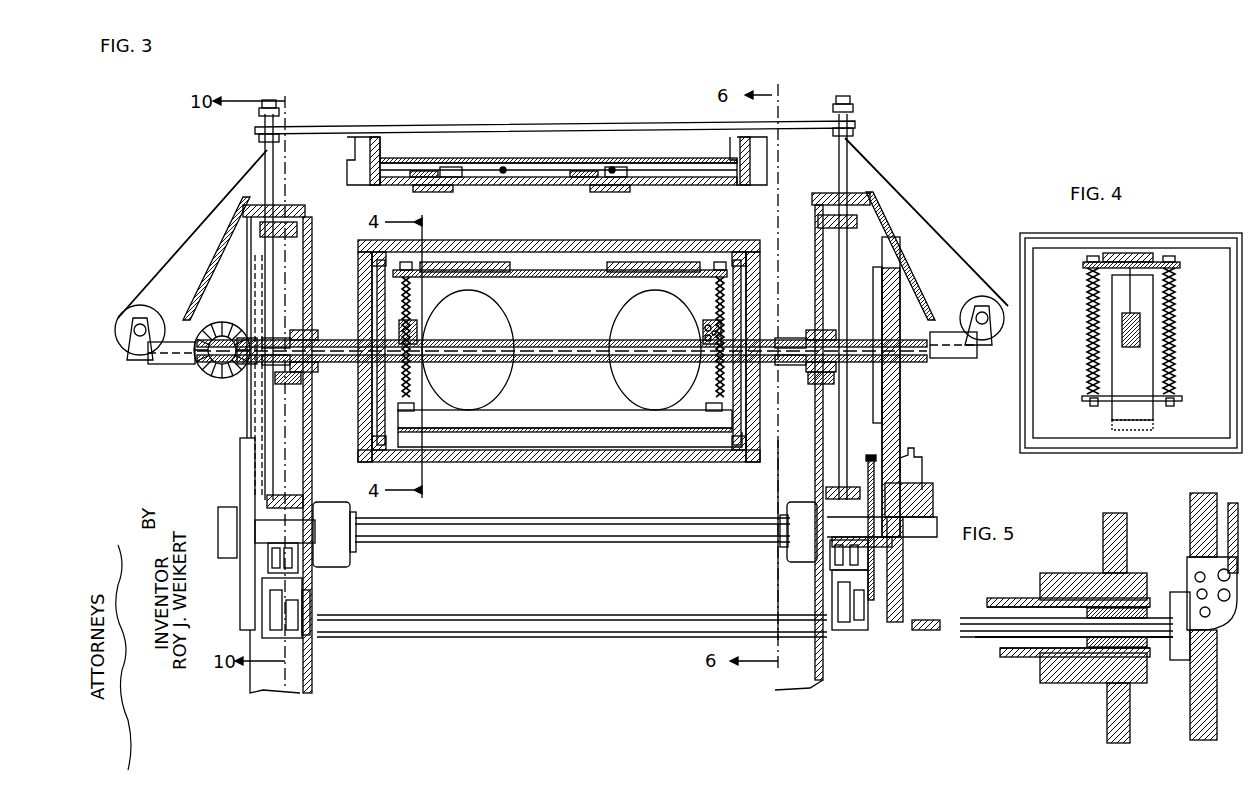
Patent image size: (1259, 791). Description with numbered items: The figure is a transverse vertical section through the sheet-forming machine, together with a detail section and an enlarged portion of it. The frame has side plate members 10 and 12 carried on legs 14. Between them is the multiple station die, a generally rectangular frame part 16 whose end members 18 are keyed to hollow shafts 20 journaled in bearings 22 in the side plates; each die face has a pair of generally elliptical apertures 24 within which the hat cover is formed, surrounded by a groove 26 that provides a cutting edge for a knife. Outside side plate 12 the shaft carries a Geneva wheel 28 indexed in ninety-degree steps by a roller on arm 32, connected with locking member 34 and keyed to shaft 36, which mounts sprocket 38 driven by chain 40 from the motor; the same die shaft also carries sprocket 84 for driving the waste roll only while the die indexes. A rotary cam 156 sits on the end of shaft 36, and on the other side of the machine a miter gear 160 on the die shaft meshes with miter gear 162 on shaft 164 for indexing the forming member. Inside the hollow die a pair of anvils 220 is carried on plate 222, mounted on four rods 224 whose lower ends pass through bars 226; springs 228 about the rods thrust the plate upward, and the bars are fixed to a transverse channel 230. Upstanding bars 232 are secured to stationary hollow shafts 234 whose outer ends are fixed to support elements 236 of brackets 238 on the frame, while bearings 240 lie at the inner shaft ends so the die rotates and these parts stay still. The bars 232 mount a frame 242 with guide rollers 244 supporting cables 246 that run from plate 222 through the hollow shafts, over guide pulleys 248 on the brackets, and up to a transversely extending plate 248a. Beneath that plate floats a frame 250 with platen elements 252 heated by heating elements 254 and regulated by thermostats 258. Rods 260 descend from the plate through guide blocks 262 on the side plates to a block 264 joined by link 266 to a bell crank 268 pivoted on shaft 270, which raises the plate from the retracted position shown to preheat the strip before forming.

In FIG. 3, the side plate member 10 is at (307, 238).
In FIG. 3, the side plate member 12 is at (800, 215).
In FIG. 3, the legs 14 is at (312, 700).
In FIG. 3, the rectangular frame part 16 is at (708, 240).
In FIG. 4, the rectangular frame part 16 is at (1037, 237).
In FIG. 3, the end members 18 is at (380, 281).
In FIG. 5, the end members 18 is at (1115, 700).
In FIG. 3, the hollow shafts 20 is at (325, 340).
In FIG. 5, the hollow shafts 20 is at (1010, 656).
In FIG. 3, the bearings 22 is at (320, 387).
In FIG. 3, the elliptical apertures 24 is at (620, 247).
In FIG. 4, the elliptical apertures 24 is at (1144, 238).
In FIG. 3, the groove 26 is at (392, 245).
In FIG. 3, the Geneva wheel 28 is at (901, 370).
In FIG. 3, the arm 32 is at (915, 468).
In FIG. 3, the locking member 34 is at (903, 562).
In FIG. 3, the shaft 36 is at (545, 533).
In FIG. 3, the sprocket 38 is at (886, 276).
In FIG. 3, the drive chain 40 is at (880, 584).
In FIG. 5, the drive chain 40 is at (1046, 607).
In FIG. 3, the sprocket 84 is at (901, 400).
In FIG. 3, the rotary cam 156 is at (245, 580).
In FIG. 3, the miter gear 160 is at (230, 375).
In FIG. 3, the miter gear 162 is at (210, 365).
In FIG. 3, the shaft 164 is at (215, 370).
In FIG. 3, the anvils 220 is at (530, 283).
In FIG. 4, the anvils 220 is at (1113, 250).
In FIG. 3, the support plate 222 is at (590, 278).
In FIG. 4, the support plate 222 is at (1083, 268).
In FIG. 3, the rods 224 is at (395, 373).
In FIG. 4, the rods 224 is at (1178, 290).
In FIG. 3, the bars 226 is at (420, 435).
In FIG. 4, the bars 226 is at (1182, 400).
In FIG. 3, the springs 228 is at (400, 280).
In FIG. 4, the springs 228 is at (1087, 382).
In FIG. 3, the channel 230 is at (635, 438).
In FIG. 4, the channel 230 is at (1153, 418).
In FIG. 3, the bars 232 is at (414, 354).
In FIG. 4, the bars 232 is at (1140, 352).
In FIG. 5, the bars 232 is at (1195, 502).
In FIG. 3, the hollow shafts 234 is at (255, 432).
In FIG. 5, the hollow shafts 234 is at (970, 630).
In FIG. 3, the support elements 236 is at (955, 358).
In FIG. 3, the brackets 238 is at (180, 267).
In FIG. 5, the bearings 240 is at (1075, 673).
In FIG. 3, the frame 242 is at (715, 352).
In FIG. 5, the frame 242 is at (1198, 605).
In FIG. 3, the guide rollers 244 is at (700, 342).
In FIG. 5, the guide rollers 244 is at (1195, 572).
In FIG. 3, the cables 246 is at (212, 200).
In FIG. 4, the cables 246 is at (1130, 294).
In FIG. 5, the cables 246 is at (920, 632).
In FIG. 3, the guide pulleys 248 is at (150, 320).
In FIG. 3, the transversely extending plate 248a is at (818, 118).
In FIG. 3, the frame 250 is at (762, 123).
In FIG. 3, the platen elements 252 is at (600, 185).
In FIG. 3, the heating elements 254 is at (612, 166).
In FIG. 3, the thermostats 258 is at (455, 167).
In FIG. 3, the rods 260 is at (270, 147).
In FIG. 3, the guide blocks 262 is at (260, 222).
In FIG. 3, the block 264 is at (845, 560).
In FIG. 3, the link 266 is at (283, 575).
In FIG. 3, the bell crank 268 is at (285, 622).
In FIG. 3, the shaft 270 is at (700, 615).